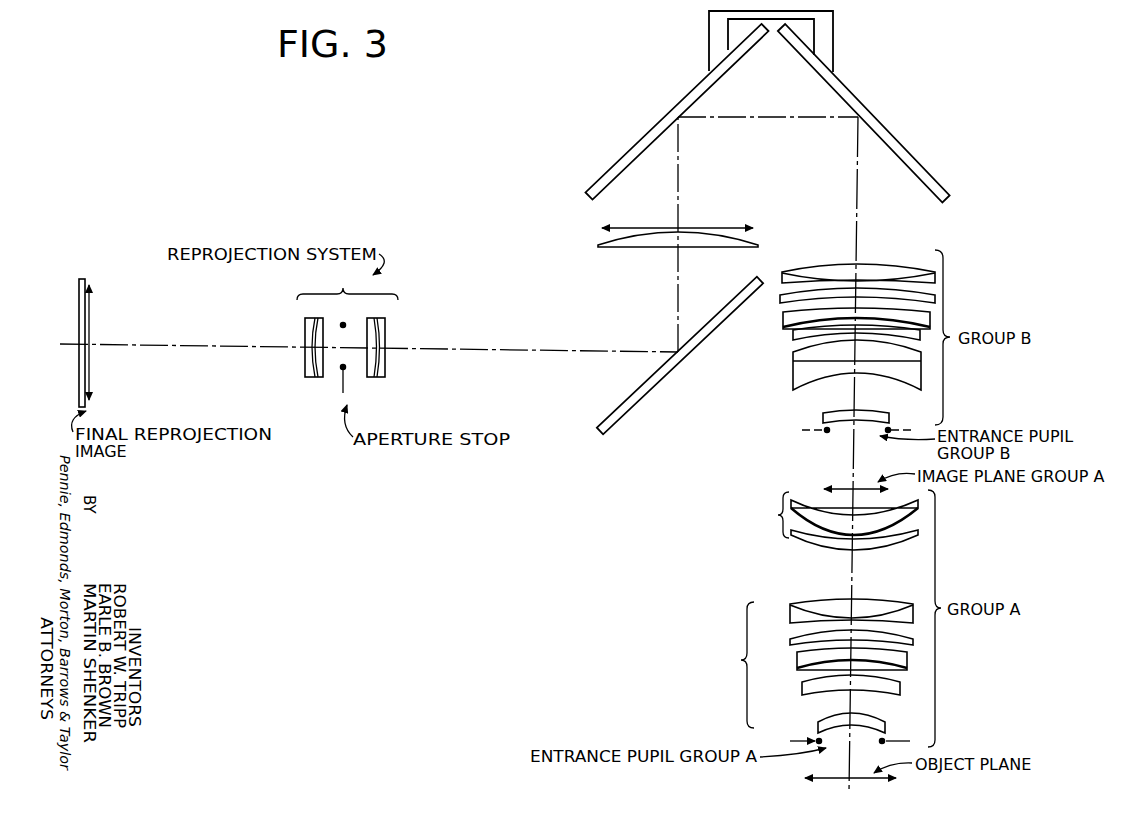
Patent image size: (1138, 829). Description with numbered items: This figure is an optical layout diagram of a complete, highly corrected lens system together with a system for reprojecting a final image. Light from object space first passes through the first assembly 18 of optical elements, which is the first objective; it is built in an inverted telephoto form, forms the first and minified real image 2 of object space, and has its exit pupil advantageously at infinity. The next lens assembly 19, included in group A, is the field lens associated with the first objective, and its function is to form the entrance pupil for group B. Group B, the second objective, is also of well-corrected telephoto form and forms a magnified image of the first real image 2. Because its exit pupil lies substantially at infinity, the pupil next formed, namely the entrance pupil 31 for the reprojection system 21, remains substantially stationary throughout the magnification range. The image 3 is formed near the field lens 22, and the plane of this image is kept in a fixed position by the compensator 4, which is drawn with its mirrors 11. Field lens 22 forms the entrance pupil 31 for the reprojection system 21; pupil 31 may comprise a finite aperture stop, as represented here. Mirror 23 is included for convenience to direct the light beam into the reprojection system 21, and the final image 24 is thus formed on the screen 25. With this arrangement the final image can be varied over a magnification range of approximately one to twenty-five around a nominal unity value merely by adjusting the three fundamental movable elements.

The first real image 2 is at (824, 486).
The image 3 is at (626, 228).
The compensator 4 is at (882, 105).
The roof mirrors 11 is at (684, 98).
The first assembly of optical elements 18 is at (812, 666).
The lens assembly 19 is at (778, 515).
The reprojection system 21 is at (343, 290).
The field lens 22 is at (603, 243).
The mirror 23 is at (645, 388).
The final image 24 is at (92, 296).
The screen 25 is at (83, 278).
The entrance pupil 31 is at (343, 318).